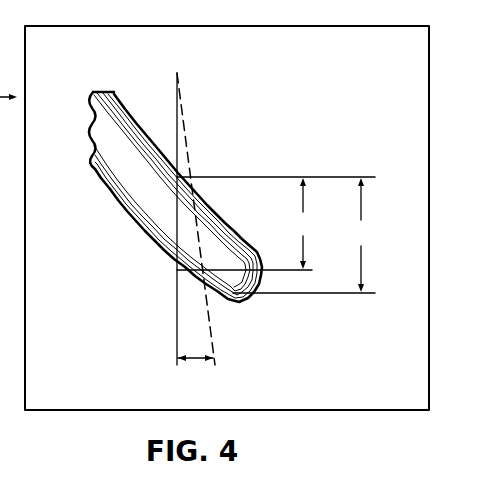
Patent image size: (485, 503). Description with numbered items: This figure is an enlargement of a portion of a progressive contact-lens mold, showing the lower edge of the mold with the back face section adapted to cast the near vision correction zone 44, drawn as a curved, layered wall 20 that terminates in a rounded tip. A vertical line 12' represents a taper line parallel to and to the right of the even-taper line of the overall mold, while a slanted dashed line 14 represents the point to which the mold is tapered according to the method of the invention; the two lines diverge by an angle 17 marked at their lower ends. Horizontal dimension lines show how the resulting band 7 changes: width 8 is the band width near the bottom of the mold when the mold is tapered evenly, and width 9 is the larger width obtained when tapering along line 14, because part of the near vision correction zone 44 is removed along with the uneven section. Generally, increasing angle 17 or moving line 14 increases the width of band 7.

The vane 20 is at (170, 186).
The near vision correction zone 44 is at (136, 116).
The line 12' is at (134, 219).
The line 14 is at (221, 337).
The angle 17 is at (197, 358).
The width 8 is at (244, 224).
The width 9 is at (276, 235).
The band 7 is at (398, 228).